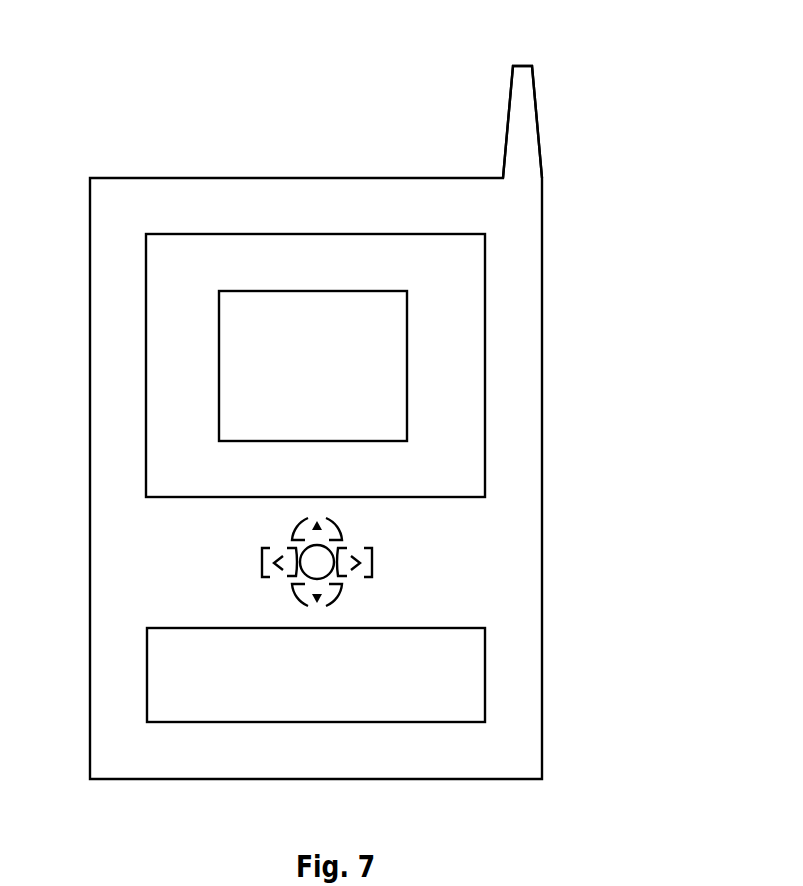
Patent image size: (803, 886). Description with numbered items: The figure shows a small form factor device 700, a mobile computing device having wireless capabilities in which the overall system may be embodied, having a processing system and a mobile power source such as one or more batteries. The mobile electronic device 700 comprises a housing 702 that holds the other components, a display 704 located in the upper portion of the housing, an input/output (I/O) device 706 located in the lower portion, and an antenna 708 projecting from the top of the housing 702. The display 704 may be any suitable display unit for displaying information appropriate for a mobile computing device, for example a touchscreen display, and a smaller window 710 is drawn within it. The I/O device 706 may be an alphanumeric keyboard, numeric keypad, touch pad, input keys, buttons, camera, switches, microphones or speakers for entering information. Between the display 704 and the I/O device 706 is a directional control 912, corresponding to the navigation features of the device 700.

The small form factor device 700 is at (99, 70).
The housing 702 is at (542, 478).
The display 704 is at (485, 253).
The input/output (I/O) device 706 is at (485, 662).
The antenna 708 is at (507, 113).
The display window 710 is at (407, 388).
The navigation control 912 is at (406, 552).